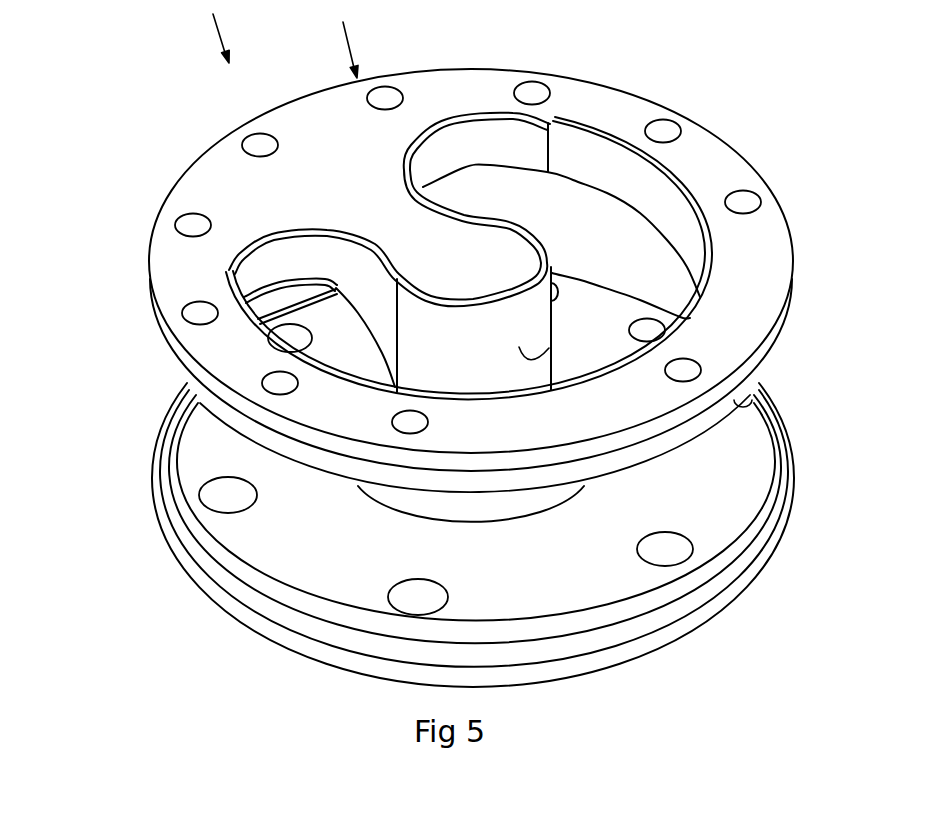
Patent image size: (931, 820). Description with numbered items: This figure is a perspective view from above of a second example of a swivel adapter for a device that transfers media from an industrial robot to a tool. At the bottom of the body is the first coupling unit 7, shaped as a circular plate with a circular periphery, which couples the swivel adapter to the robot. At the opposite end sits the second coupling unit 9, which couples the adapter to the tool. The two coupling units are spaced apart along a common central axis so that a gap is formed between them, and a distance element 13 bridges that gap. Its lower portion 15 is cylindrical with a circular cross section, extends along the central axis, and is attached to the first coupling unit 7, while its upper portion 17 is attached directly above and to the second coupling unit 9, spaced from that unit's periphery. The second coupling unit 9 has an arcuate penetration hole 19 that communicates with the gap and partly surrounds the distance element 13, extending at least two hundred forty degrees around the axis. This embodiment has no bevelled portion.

The first coupling unit 7 is at (703, 535).
The second coupling unit 9 is at (600, 103).
The distance element 13 is at (392, 279).
The lower portion 15 is at (553, 357).
The upper portion 17 is at (348, 271).
The penetration hole 19 is at (577, 203).